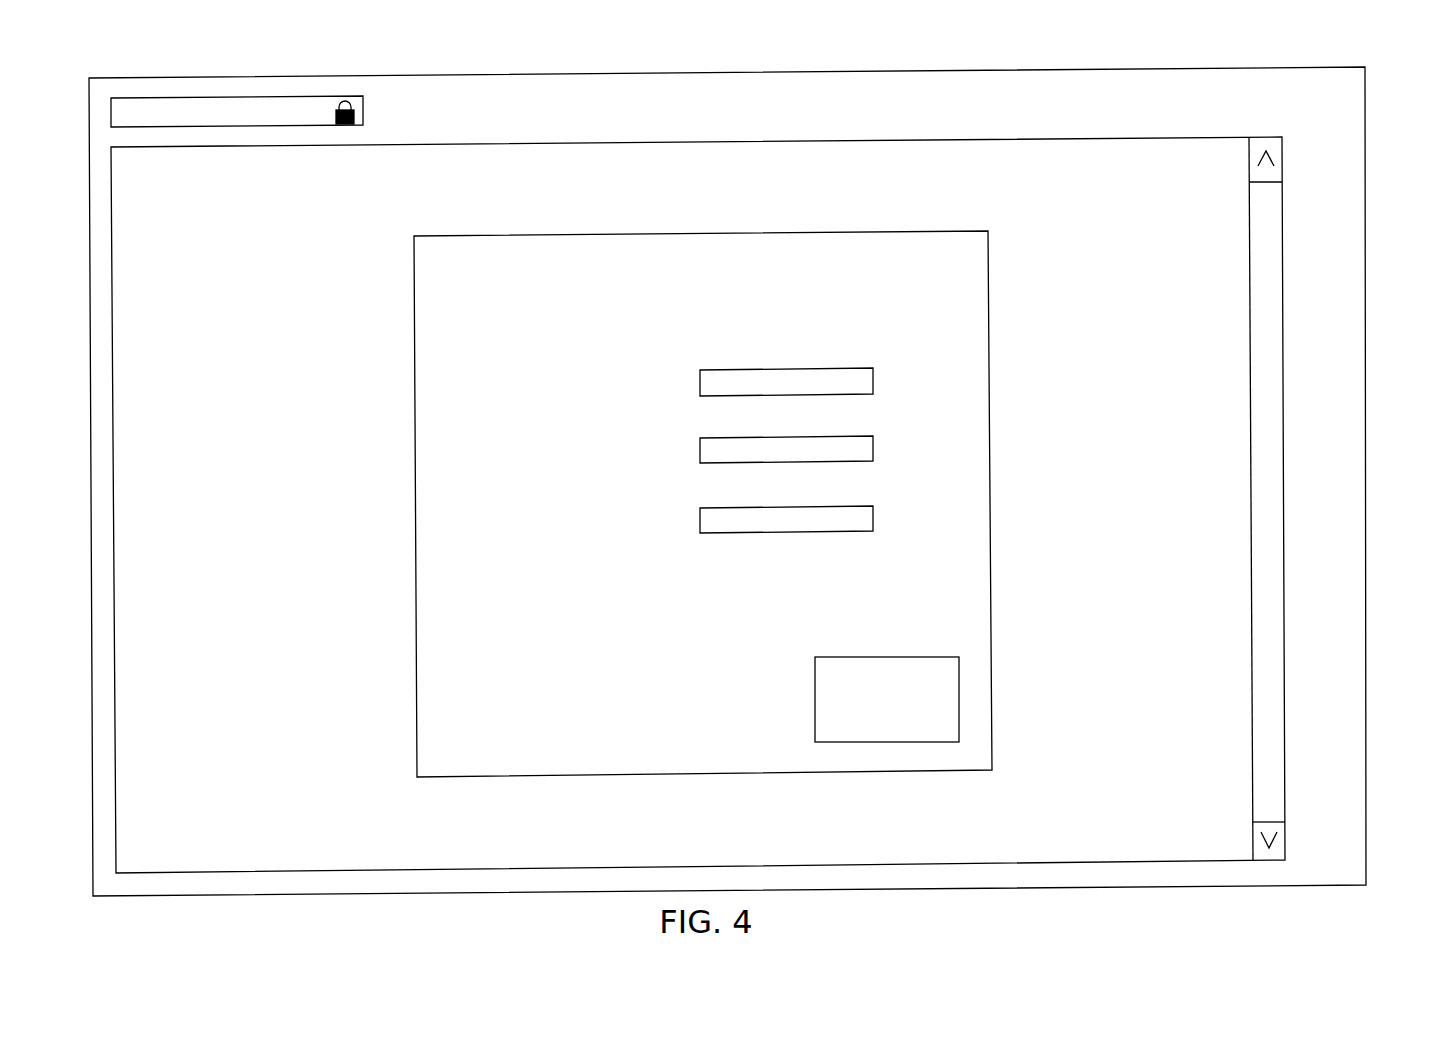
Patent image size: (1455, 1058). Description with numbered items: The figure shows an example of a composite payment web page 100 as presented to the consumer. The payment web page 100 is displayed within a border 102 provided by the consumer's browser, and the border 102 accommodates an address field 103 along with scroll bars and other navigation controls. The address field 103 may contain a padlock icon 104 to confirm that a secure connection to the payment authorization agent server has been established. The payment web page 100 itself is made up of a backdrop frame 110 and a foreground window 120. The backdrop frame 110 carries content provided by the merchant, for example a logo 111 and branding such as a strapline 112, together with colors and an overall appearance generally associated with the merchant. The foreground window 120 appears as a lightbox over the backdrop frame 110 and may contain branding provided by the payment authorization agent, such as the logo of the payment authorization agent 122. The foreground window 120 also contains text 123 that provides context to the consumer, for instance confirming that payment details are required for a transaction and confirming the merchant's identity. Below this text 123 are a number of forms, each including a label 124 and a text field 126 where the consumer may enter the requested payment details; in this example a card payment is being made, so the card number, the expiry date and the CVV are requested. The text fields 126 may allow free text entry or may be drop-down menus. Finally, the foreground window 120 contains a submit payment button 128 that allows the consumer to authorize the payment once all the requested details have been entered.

The composite payment web page 100 is at (769, 454).
The border 102 is at (1278, 93).
The address field 103 is at (240, 98).
The padlock icon 104 is at (348, 103).
The backdrop frame 110 is at (698, 505).
The logo 111 is at (253, 208).
The strapline 112 is at (213, 288).
The foreground window 120 is at (703, 504).
The logo of the payment authorization agent 122 is at (452, 680).
The text 123 is at (785, 290).
The label 124 is at (611, 553).
The text field 126 is at (866, 548).
The submit payment button 128 is at (945, 693).